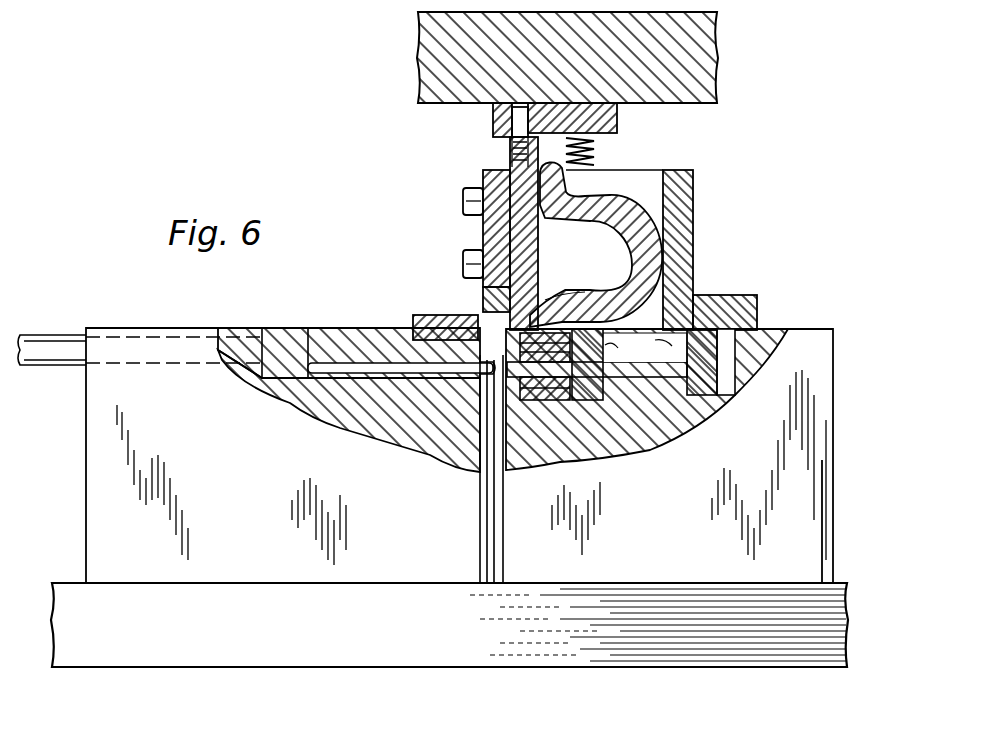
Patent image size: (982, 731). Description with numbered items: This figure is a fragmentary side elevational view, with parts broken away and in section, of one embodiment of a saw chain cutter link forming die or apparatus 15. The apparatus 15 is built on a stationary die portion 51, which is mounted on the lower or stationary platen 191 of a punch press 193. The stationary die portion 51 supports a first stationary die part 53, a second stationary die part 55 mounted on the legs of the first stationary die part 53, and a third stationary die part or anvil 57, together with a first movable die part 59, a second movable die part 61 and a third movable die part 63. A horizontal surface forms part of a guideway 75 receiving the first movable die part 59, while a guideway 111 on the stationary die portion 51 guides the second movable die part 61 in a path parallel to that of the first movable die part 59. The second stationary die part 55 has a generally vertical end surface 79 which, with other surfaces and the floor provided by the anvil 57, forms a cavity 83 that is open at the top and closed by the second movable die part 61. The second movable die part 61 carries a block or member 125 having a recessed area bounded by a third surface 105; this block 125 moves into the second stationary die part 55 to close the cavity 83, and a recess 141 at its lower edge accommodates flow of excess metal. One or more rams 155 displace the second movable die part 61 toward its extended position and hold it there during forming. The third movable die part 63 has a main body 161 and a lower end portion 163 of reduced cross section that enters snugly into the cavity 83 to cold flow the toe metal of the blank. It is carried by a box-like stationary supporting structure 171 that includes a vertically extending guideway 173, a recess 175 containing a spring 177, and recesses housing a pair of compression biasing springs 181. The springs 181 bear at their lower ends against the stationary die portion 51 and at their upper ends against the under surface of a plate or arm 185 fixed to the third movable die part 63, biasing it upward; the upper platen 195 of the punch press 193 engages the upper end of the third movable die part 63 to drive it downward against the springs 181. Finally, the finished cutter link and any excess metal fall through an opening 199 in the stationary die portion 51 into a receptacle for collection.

The die or apparatus 15 is at (228, 678).
The stationary die portion 51 is at (815, 365).
The first stationary die part 53 is at (690, 398).
The second stationary die part 55 is at (638, 350).
The third stationary die part or anvil 57 is at (548, 400).
The first movable die part 59 is at (588, 400).
The second movable die part 61 is at (330, 337).
The third movable die part 63 is at (517, 223).
The guideway 75 is at (492, 412).
The end surface 79 is at (486, 377).
The cavity 83 is at (532, 303).
The third surface 105 is at (505, 312).
The guideway 111 is at (318, 413).
The second block or member 125 is at (432, 318).
The recess 141 is at (497, 384).
The ram 155 is at (48, 348).
The main body 161 is at (538, 236).
The lower end portion 163 is at (520, 293).
The stationary supporting structure 171 is at (721, 238).
The vertically extending guideway 173 is at (515, 200).
The recess 175 is at (665, 182).
The spring 177 is at (678, 215).
The biasing springs 181 is at (594, 150).
The plate or arm 185 is at (607, 133).
The lower or stationary platen 191 is at (528, 640).
The punch press 193 is at (737, 678).
The upper platen 195 is at (430, 46).
The opening 199 is at (480, 526).